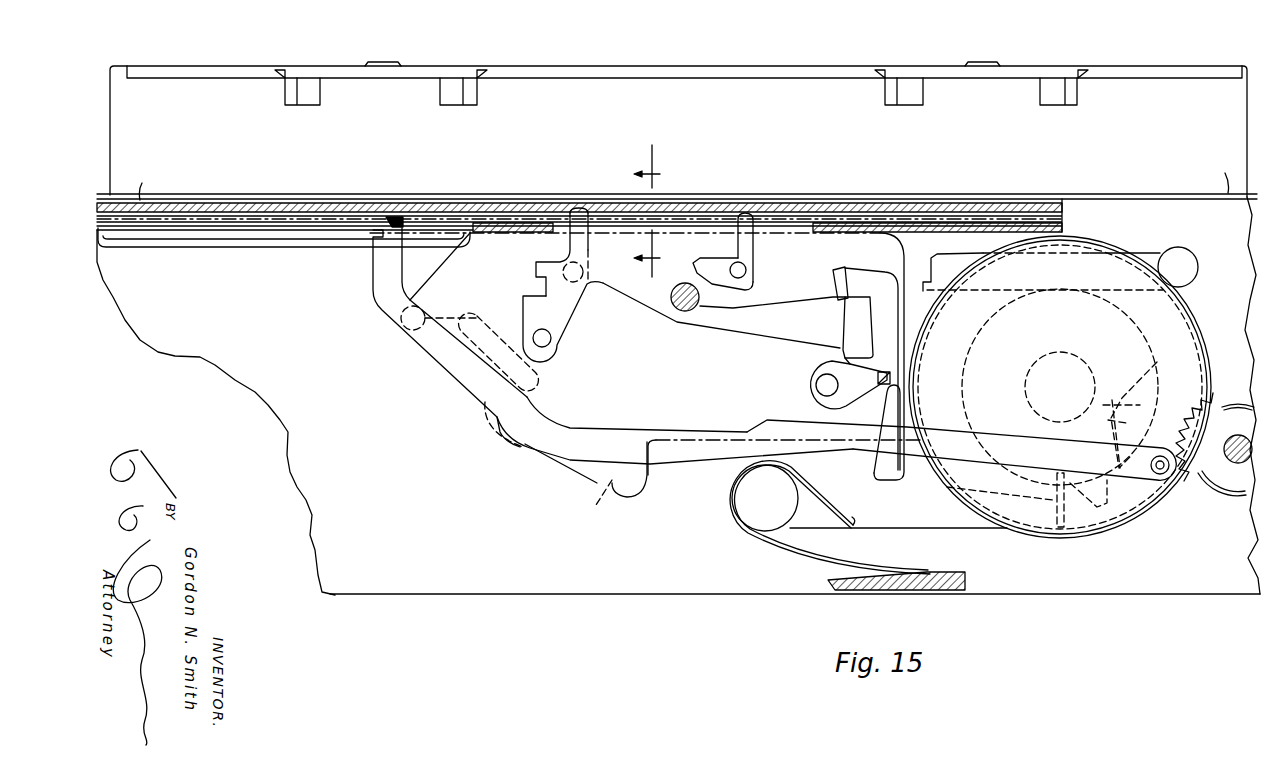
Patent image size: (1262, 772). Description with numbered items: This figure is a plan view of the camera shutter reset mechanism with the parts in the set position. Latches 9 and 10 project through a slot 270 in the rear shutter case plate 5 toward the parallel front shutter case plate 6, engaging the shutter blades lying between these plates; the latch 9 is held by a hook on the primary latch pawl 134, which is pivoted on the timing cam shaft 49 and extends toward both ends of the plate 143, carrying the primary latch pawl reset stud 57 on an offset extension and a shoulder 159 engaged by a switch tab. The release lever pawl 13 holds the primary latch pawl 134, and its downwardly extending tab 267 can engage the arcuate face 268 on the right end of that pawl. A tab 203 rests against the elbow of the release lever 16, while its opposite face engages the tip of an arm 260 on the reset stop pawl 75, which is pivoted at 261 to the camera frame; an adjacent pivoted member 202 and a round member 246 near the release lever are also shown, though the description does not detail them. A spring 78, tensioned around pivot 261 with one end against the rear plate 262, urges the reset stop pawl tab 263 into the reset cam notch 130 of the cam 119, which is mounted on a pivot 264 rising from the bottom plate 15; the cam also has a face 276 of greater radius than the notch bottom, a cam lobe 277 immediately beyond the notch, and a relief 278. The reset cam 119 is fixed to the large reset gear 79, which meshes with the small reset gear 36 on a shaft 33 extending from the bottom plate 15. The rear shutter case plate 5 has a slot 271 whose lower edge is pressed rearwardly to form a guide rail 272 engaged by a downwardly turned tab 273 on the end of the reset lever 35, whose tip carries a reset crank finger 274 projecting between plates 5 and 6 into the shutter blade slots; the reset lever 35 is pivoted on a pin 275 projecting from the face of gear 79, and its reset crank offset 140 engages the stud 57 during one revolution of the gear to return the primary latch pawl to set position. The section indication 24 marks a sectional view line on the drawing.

The rear shutter case plate 5 is at (1063, 228).
The front shutter case plate 6 is at (1012, 195).
The latch 9 is at (754, 263).
The latch 10 is at (535, 270).
The release lever pawl 13 is at (898, 328).
The bottom plate 15 is at (643, 595).
The release lever 16 is at (935, 265).
The section line 24 is at (654, 212).
The shaft 33 is at (1238, 463).
The reset lever 35 is at (705, 462).
The small reset gear 36 is at (1233, 412).
The timing cam shaft 49 is at (698, 306).
The primary latch pawl reset stud 57 is at (542, 329).
The reset stop pawl 75 is at (912, 529).
The spring 78 is at (802, 553).
The large reset gear 79 is at (1196, 362).
The reset cam 119 is at (1140, 405).
The reset cam notch 130 is at (1062, 480).
The primary latch pawl 134 is at (730, 332).
The reset crank offset 140 is at (750, 428).
The plate 143 is at (606, 492).
The shoulder 159 is at (567, 315).
The roller member 202 is at (816, 388).
The tab 203 is at (878, 377).
The roller 246 is at (1180, 252).
The arm 260 is at (881, 398).
The pivot 261 is at (775, 508).
The rear plate 262 is at (897, 592).
The reset stop pawl tab 263 is at (1068, 505).
The pivot 264 is at (1082, 375).
The tab 267 is at (835, 272).
The arcuate face 268 is at (843, 326).
The slot 270 is at (696, 226).
The slot 271 is at (190, 250).
The guide rail 272 is at (297, 252).
The tab 273 is at (372, 248).
The reset crank finger 274 is at (398, 222).
The pin 275 is at (1166, 458).
The face 276 is at (963, 350).
The cam lobe 277 is at (1122, 476).
The relief 278 is at (1126, 423).